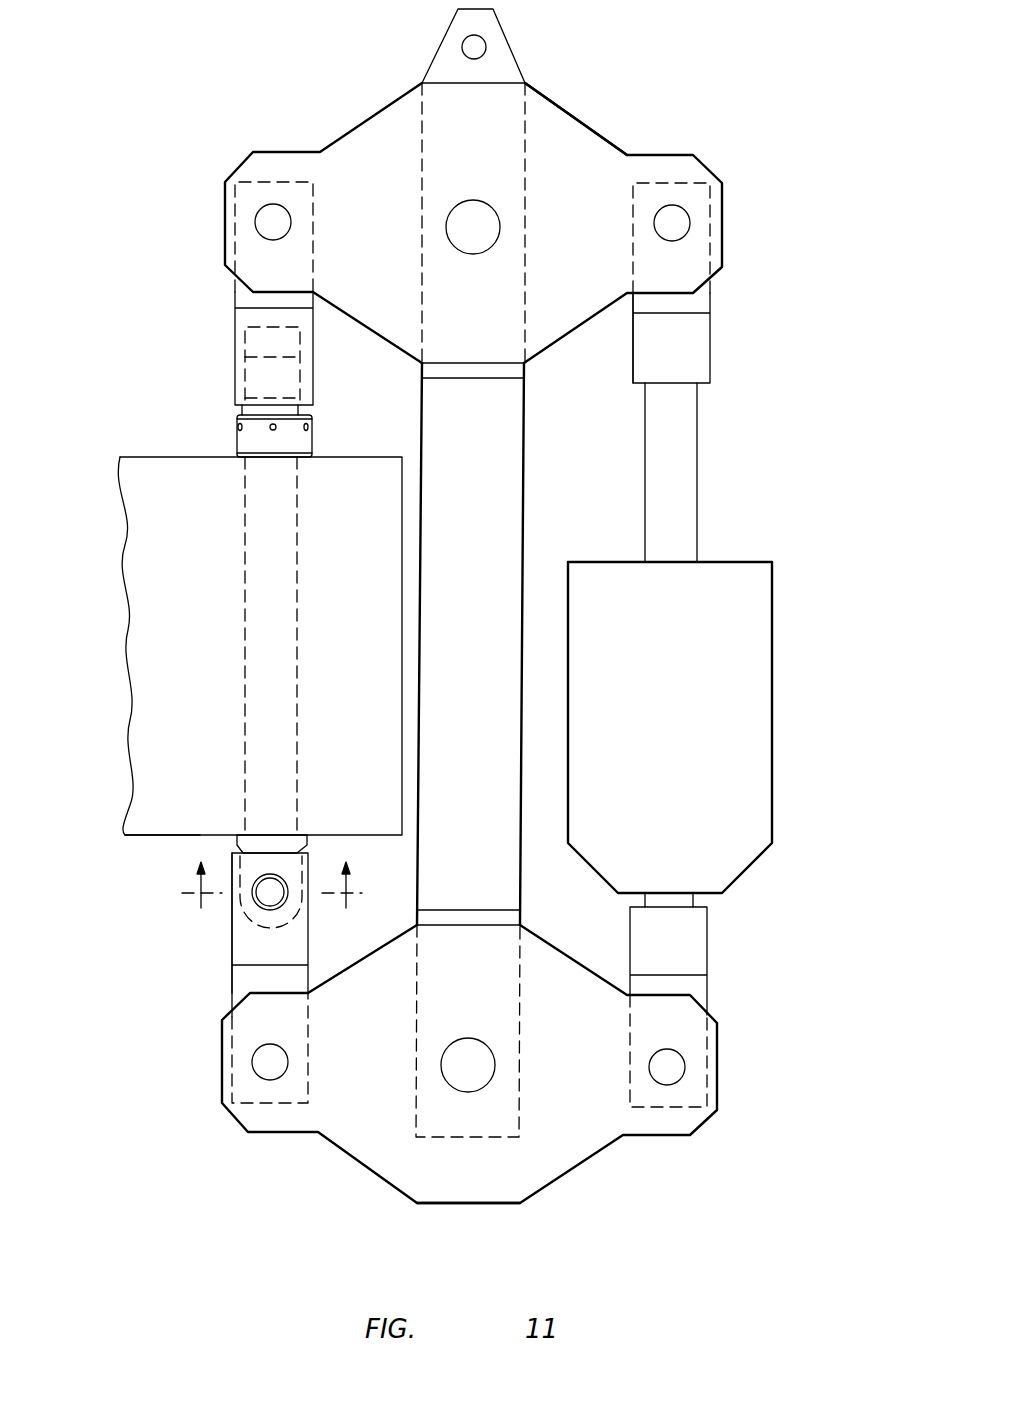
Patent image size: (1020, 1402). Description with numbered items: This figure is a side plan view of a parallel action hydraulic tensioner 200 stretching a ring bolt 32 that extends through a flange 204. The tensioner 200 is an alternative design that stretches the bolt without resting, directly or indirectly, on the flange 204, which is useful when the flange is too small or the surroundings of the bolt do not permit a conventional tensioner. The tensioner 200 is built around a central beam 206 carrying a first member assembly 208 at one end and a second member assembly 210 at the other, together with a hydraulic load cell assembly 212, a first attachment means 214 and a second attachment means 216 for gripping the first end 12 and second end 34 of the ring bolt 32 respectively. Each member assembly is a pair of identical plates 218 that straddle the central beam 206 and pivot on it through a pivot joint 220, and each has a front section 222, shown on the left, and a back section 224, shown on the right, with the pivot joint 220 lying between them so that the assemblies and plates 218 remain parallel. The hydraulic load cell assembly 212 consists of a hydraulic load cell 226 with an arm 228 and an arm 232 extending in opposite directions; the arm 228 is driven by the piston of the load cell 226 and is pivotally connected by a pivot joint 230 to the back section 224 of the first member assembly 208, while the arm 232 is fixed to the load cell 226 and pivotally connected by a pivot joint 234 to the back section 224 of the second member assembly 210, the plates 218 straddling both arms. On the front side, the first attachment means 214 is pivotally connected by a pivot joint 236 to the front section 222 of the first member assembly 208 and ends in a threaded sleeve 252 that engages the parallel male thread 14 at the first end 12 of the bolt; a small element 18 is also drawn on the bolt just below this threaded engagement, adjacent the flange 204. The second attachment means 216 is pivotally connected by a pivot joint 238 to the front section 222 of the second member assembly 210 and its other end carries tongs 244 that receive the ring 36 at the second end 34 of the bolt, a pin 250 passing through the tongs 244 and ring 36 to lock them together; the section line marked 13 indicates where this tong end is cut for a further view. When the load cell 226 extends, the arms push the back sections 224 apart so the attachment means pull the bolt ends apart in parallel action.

The first end 12 is at (247, 395).
The section line 13- 13 is at (272, 885).
The parallel male thread 14 is at (245, 370).
The connector block 18 is at (235, 432).
The ring bolt 32 is at (245, 547).
The second end 34 is at (240, 842).
The ring 36 is at (253, 927).
The parallel action hydraulic tensioner 200 is at (728, 345).
The flange 204 is at (132, 838).
The central beam 206 is at (524, 508).
The first member assembly 208 is at (365, 120).
The second member assembly 210 is at (337, 1148).
The hydraulic load cell assembly 212 is at (788, 625).
The first attachment means 214 is at (235, 317).
The second attachment means 216 is at (232, 955).
The plates 218 is at (588, 123).
The pivot joint 220 is at (482, 200).
The front section 222 is at (238, 162).
The back section 224 is at (713, 170).
The hydraulic load cell 226 is at (772, 723).
The arm 228 is at (697, 487).
The pivot joint 230 is at (692, 223).
The arm 232 is at (707, 958).
The pivot joint 234 is at (687, 1067).
The pivot joint 236 is at (255, 220).
The pivot joint 238 is at (253, 1070).
The tongs 244 is at (232, 943).
The pin 250 is at (280, 908).
The threaded sleeve 252 is at (245, 342).